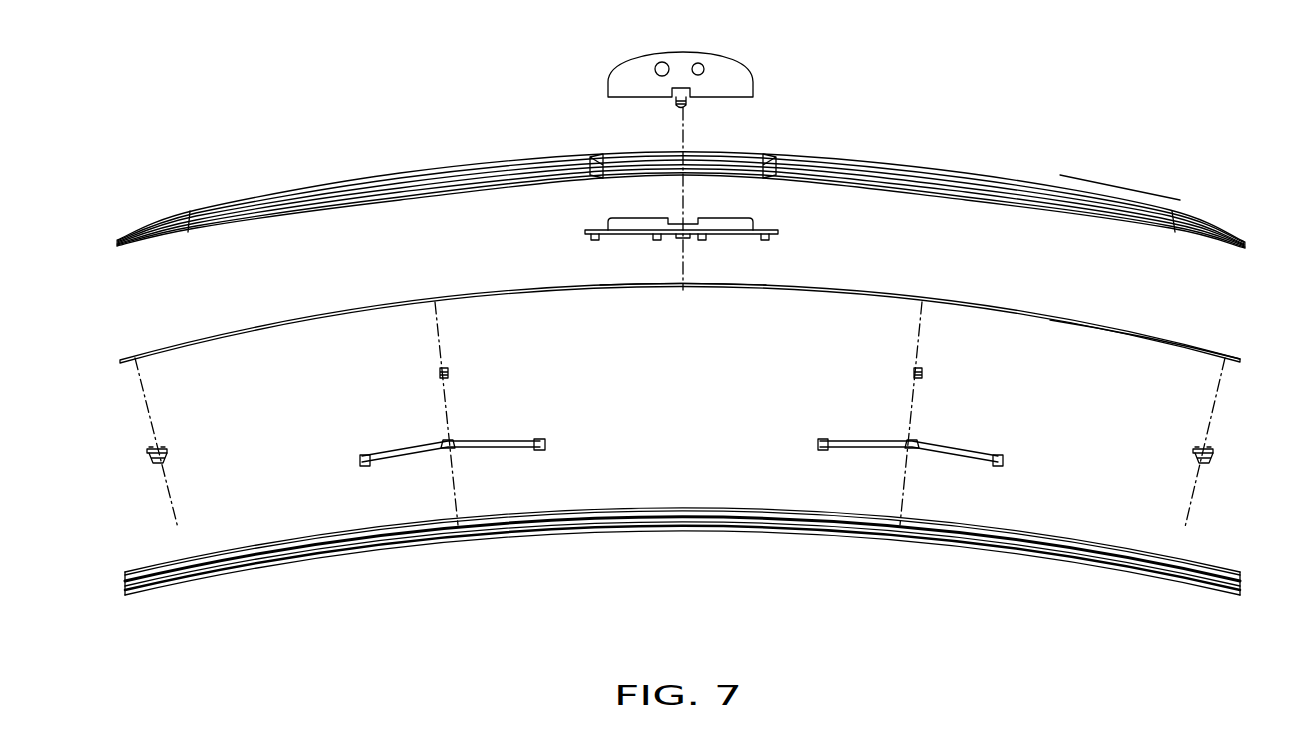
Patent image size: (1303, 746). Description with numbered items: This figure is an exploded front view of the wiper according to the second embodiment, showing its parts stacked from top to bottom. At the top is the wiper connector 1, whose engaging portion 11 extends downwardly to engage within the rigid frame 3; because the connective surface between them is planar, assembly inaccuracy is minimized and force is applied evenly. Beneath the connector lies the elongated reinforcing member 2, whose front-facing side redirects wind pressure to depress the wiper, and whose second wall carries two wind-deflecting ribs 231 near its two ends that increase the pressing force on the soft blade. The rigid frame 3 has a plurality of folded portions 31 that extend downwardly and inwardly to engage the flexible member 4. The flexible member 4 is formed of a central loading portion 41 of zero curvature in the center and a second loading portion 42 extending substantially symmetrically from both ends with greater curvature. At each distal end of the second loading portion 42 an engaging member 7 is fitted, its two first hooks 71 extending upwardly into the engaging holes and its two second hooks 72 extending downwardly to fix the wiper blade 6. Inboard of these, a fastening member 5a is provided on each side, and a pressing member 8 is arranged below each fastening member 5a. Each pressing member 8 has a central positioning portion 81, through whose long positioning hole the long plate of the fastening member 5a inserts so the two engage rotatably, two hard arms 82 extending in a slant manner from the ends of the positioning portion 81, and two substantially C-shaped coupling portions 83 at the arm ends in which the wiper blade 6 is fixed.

The wiper connector 1 is at (756, 62).
The engaging portion 11 is at (686, 108).
The reinforcing member 2 is at (951, 167).
The wind-deflecting ribs 231 is at (1074, 198).
The rigid frame 3 is at (584, 231).
The folded portions 31 is at (657, 241).
The flexible member 4 is at (966, 299).
The central loading portion 41 is at (693, 294).
The second loading portion 42 is at (1138, 337).
The fastening member 5a is at (437, 371).
The wiper blade 6 is at (650, 541).
The engaging member 7 is at (682, 451).
The first hooks 71 is at (165, 447).
The second hooks 72 is at (155, 463).
The pressing member 8 is at (681, 435).
The positioning portion 81 is at (448, 442).
The hard arms 82 is at (403, 456).
The coupling portions 83 is at (364, 461).